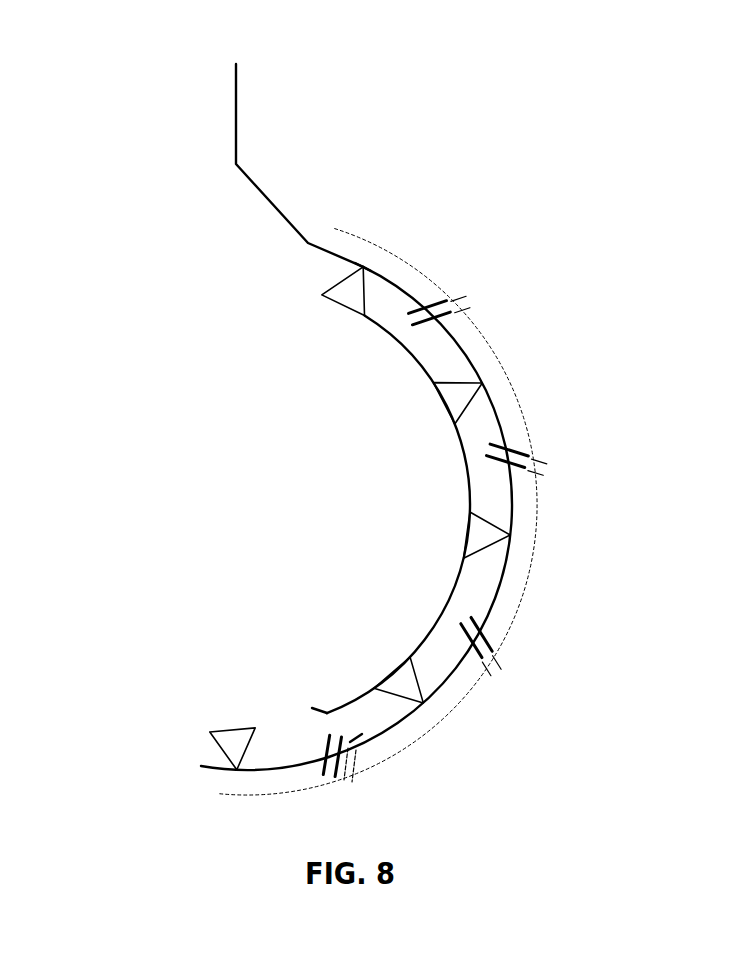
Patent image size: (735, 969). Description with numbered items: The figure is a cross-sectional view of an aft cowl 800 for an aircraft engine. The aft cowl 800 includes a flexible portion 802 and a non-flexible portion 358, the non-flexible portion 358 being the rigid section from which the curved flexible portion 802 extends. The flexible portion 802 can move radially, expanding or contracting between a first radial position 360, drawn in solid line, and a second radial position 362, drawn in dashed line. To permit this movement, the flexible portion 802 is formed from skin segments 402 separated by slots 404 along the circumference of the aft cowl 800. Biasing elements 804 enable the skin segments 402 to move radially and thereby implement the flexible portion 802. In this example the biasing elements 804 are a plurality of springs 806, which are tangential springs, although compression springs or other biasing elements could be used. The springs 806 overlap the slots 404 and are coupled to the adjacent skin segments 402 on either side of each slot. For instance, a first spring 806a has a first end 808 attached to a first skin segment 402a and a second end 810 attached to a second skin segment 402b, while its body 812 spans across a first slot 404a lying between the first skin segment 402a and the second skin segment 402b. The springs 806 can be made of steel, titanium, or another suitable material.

The aft cowl 800 is at (200, 43).
The non-flexible portion 358 is at (262, 190).
The first radial position 360 is at (371, 258).
The second radial position 362 is at (545, 514).
The skin segments 402 is at (530, 424).
The first skin segment 402a is at (262, 770).
The second skin segment 402b is at (444, 675).
The slots 404 is at (468, 302).
The first slot 404a is at (352, 748).
The flexible portion 802 is at (588, 362).
The biasing elements 804 is at (380, 323).
The springs 806 is at (229, 690).
The first spring 806a is at (324, 706).
The first end 808 is at (316, 756).
The second end 810 is at (357, 732).
The body 812 is at (536, 478).